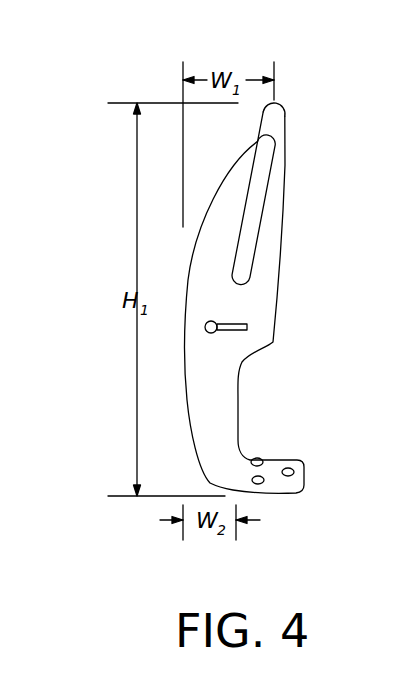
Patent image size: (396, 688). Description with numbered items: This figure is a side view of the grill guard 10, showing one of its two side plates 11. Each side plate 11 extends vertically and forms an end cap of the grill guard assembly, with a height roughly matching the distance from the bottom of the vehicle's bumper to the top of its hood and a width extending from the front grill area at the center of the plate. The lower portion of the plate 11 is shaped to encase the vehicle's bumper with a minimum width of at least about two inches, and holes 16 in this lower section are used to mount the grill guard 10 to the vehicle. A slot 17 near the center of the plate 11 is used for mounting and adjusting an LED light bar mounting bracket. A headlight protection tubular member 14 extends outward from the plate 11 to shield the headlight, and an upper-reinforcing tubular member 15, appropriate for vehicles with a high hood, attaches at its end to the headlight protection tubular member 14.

The grill guard 10 is at (128, 52).
The side plate 11 is at (218, 377).
The headlight protection tubular member 14 is at (255, 215).
The upper-reinforcing tubular member 15 is at (277, 112).
The holes 16 is at (263, 478).
The slot 17 is at (237, 322).